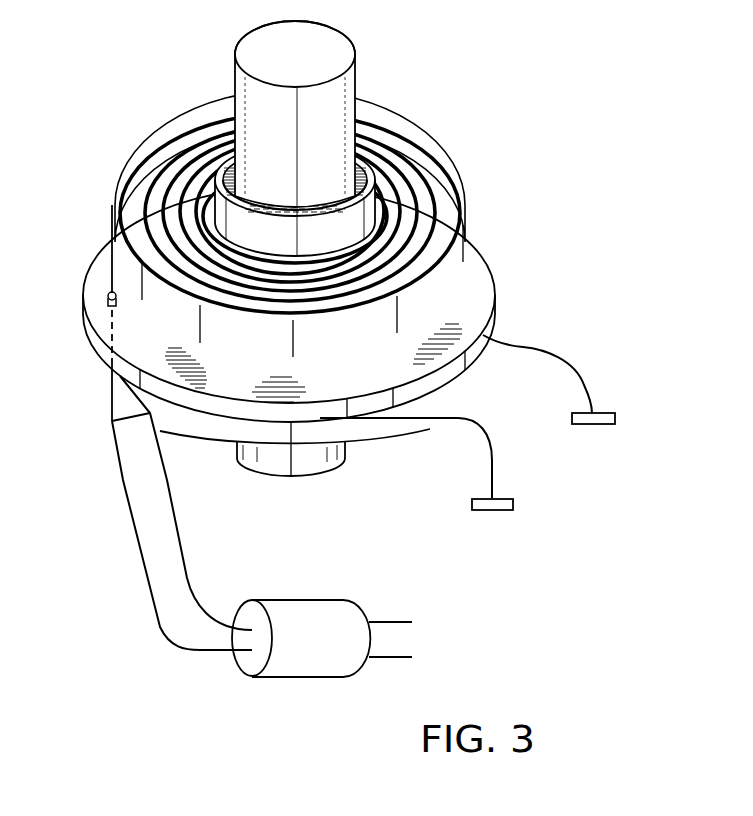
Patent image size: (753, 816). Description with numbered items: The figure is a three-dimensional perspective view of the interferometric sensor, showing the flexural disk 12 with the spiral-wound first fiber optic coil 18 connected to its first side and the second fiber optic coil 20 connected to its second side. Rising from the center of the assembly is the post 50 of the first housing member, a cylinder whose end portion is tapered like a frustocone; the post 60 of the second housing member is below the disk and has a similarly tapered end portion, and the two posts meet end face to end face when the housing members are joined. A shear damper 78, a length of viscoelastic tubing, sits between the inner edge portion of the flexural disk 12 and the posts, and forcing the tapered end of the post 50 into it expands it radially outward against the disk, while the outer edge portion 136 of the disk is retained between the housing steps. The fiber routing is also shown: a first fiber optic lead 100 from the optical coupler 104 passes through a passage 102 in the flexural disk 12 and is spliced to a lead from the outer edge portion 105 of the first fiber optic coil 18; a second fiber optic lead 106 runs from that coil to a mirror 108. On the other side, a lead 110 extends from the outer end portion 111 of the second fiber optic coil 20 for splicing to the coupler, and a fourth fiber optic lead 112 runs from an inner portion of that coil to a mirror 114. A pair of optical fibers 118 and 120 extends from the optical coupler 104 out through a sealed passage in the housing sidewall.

The flexural disk 12 is at (484, 276).
The first fiber optic coil 18 is at (130, 135).
The second fiber optic coil 20 is at (386, 428).
The post 50 is at (234, 80).
The post 60 is at (312, 478).
The shear damper 78 is at (367, 218).
The first fiber optic lead 100 is at (127, 517).
The passage 102 is at (108, 298).
The optical coupler 104 is at (310, 678).
The outer edge portion 105 is at (110, 262).
The second fiber optic lead 106 is at (576, 368).
The mirror 108 is at (616, 418).
The lead 110 is at (173, 503).
The outer end portion 111 is at (112, 421).
The fourth fiber optic lead 112 is at (450, 421).
The mirror 114 is at (496, 511).
The optical fiber 118 is at (388, 659).
The optical fiber 120 is at (386, 621).
The outer edge portion 136 is at (495, 288).